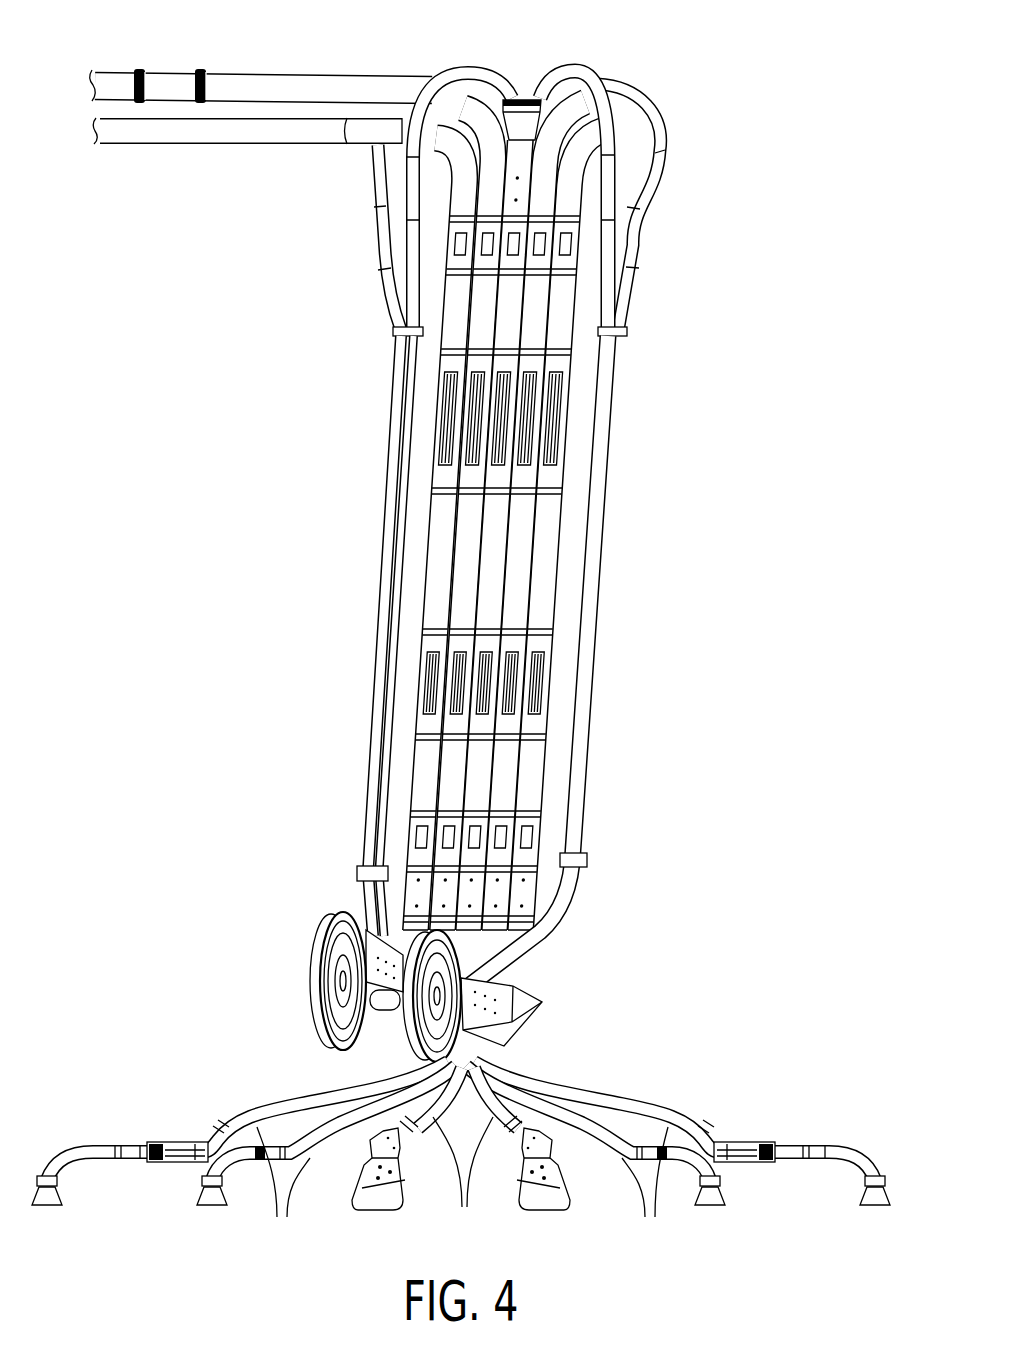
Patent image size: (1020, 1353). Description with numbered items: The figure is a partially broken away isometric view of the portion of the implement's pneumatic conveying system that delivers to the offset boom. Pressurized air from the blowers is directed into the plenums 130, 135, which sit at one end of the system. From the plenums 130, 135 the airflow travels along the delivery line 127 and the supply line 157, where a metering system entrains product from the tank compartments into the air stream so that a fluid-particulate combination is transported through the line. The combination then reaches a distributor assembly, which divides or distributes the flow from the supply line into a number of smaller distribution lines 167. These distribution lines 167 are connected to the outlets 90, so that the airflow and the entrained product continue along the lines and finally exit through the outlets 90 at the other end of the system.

The delivery line 127 is at (534, 62).
The supply line 157 is at (478, 892).
The plenum 135 is at (400, 948).
The plenum 130 is at (492, 1015).
The outlet 90 is at (48, 1196).
The distribution line 167 is at (462, 1183).